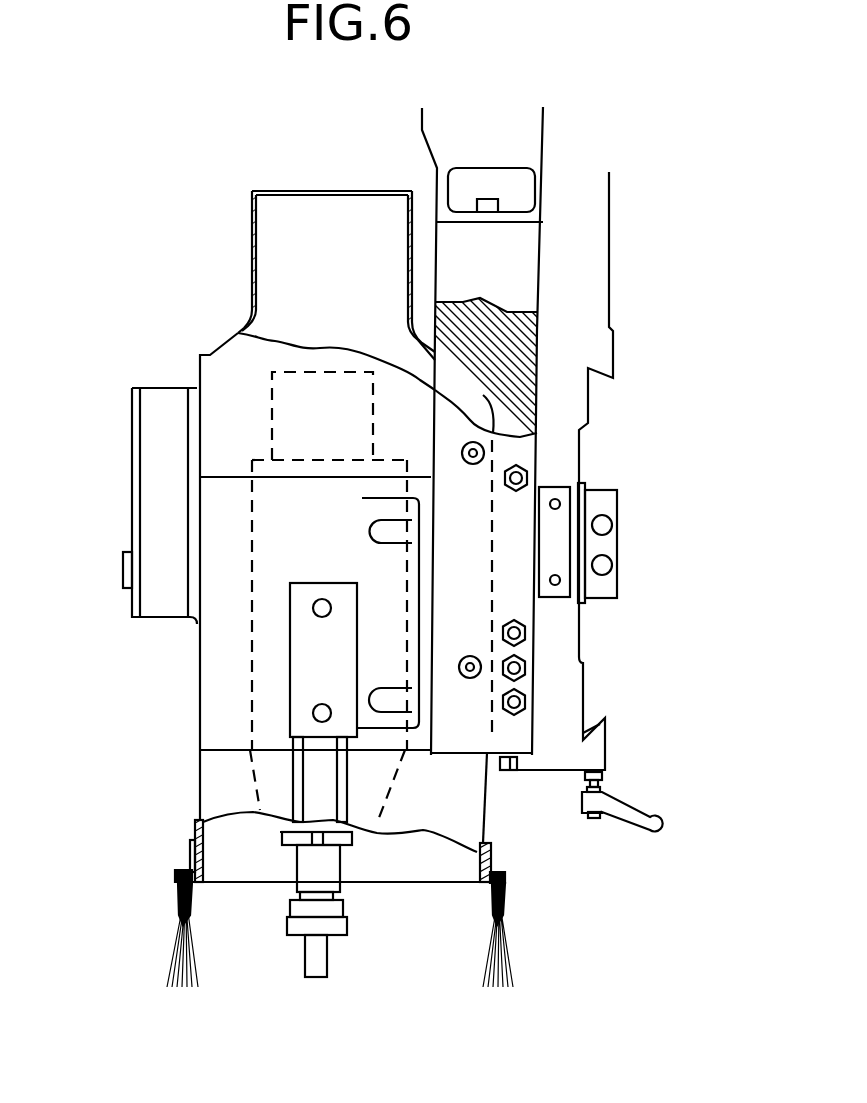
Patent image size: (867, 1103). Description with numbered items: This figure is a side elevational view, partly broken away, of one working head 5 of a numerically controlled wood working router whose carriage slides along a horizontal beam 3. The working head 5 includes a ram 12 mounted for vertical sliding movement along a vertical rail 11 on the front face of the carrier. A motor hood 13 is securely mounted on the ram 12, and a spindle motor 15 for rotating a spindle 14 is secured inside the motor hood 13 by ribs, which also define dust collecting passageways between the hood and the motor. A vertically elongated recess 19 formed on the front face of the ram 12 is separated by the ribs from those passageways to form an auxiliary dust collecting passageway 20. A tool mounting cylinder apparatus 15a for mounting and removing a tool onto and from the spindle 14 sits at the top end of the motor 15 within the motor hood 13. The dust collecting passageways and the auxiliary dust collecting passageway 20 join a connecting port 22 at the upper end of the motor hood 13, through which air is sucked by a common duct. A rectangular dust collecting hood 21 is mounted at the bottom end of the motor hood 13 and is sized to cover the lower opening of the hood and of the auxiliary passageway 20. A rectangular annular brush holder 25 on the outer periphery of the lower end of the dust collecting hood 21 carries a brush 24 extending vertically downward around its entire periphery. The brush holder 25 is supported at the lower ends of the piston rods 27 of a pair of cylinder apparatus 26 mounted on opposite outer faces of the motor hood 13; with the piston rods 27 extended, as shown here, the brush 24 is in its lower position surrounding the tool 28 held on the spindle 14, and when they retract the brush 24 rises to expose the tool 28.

The beam 3 is at (572, 423).
The working head 5 is at (210, 352).
The vertical rail 11 is at (507, 770).
The ram 12 is at (495, 283).
The motor hood 13 is at (220, 563).
The spindle 14 is at (347, 840).
The spindle motor 15 is at (250, 683).
The tool mounting cylinder apparatus 15a is at (272, 398).
The vertically elongated recess 19 is at (490, 567).
The auxiliary dust collecting passageway 20 is at (475, 396).
The dust collecting hood 21 is at (208, 782).
The connecting port 22 is at (288, 238).
The brush 24 is at (175, 957).
The brush holder 25 is at (187, 847).
The cylinder apparatus 26 is at (313, 678).
The piston rods 27 is at (340, 787).
The tool 28 is at (327, 928).